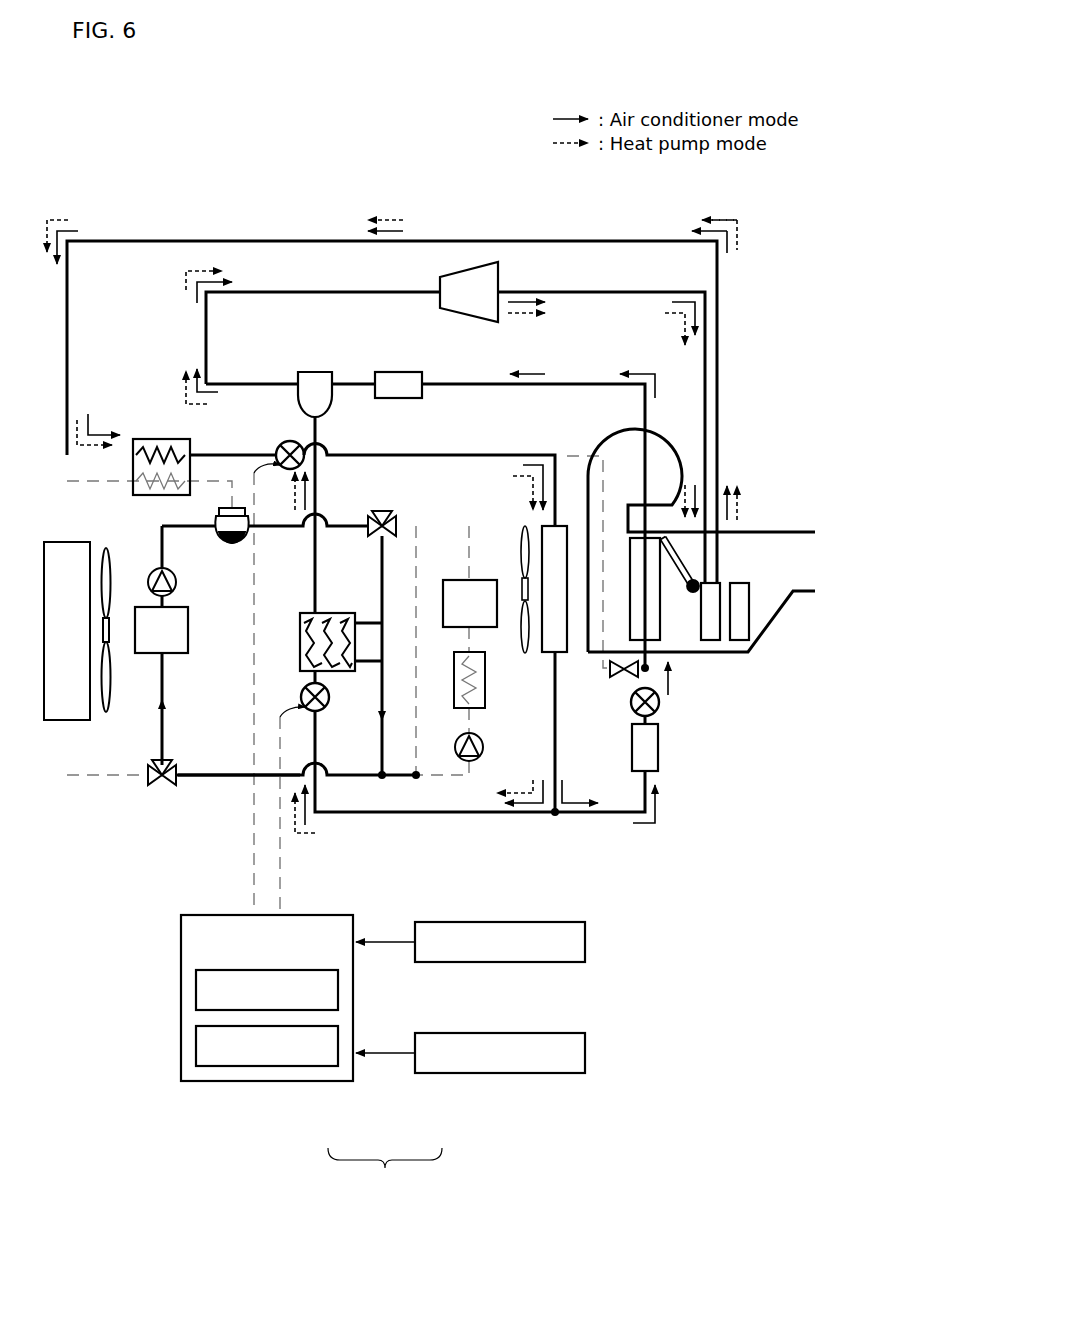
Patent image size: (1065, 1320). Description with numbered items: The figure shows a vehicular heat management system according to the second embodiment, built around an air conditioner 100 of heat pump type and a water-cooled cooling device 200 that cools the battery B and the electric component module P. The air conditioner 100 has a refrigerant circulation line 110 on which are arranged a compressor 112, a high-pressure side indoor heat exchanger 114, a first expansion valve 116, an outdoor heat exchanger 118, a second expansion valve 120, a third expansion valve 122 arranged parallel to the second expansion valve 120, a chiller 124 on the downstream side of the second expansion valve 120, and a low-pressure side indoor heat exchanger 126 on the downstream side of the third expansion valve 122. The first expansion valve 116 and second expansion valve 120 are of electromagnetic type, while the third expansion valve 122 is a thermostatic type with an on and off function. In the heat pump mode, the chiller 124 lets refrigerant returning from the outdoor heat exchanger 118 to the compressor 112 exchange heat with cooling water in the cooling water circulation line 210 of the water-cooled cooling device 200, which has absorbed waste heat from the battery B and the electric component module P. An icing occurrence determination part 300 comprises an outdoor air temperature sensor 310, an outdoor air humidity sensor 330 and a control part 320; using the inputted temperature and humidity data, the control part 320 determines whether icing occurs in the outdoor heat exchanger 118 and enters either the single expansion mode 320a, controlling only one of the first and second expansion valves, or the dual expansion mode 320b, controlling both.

The air conditioner 100 is at (336, 240).
The refrigerant circulation line 110 is at (192, 240).
The compressor 112 is at (468, 265).
The high-pressure side indoor heat exchanger 114 is at (718, 643).
The first expansion valve 116 is at (281, 446).
The outdoor heat exchanger 118 is at (564, 524).
The second expansion valve 120 is at (330, 704).
The third expansion valve 122 is at (661, 708).
The chiller 124 is at (368, 648).
The low-pressure side indoor heat exchanger 126 is at (661, 636).
The water-cooled cooling device 200 is at (190, 784).
The cooling water circulation line 210 is at (225, 778).
The icing occurrence determination part 300 is at (385, 1167).
The outdoor air temperature sensor 310 is at (428, 962).
The control part 320 is at (323, 1082).
The single expansion mode 320a is at (196, 990).
The dual expansion mode 320b is at (196, 1046).
The outdoor air humidity sensor 330 is at (440, 1074).
The battery B is at (489, 580).
The electric component module P is at (188, 630).